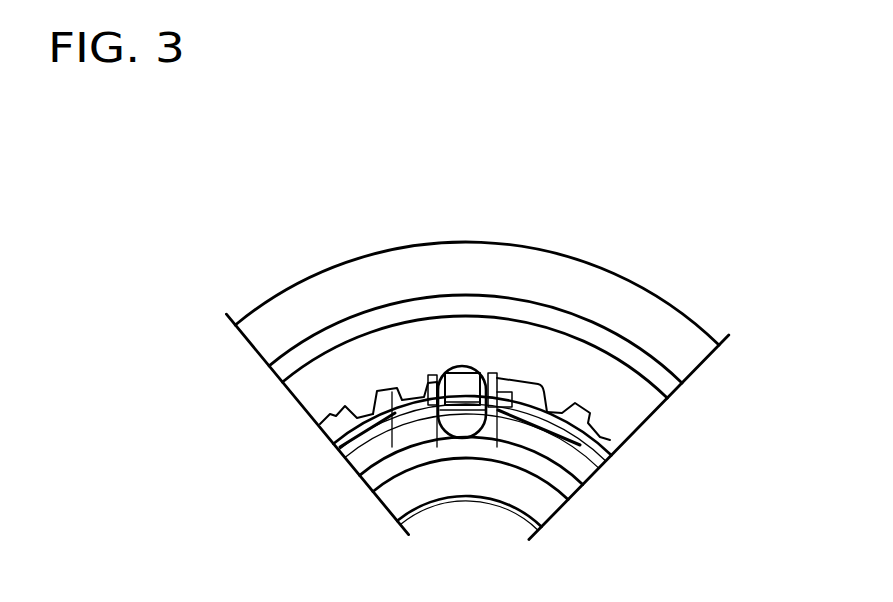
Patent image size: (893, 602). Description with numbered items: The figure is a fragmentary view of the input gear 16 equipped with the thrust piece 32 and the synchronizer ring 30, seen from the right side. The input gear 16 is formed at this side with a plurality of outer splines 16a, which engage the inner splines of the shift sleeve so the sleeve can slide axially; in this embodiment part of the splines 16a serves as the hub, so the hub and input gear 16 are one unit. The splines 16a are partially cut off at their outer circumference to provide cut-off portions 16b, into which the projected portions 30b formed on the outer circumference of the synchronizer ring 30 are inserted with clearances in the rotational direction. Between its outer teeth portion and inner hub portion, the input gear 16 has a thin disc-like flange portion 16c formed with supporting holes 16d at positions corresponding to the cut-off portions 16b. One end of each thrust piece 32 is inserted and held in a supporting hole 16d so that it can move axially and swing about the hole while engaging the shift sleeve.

The input gear 16 is at (358, 285).
The outer splines 16a is at (343, 420).
The cut-off portions 16b is at (360, 455).
The flange portion 16c is at (535, 350).
The supporting holes 16d is at (462, 370).
The synchronizer ring 30 is at (608, 460).
The projected portions 30b is at (560, 420).
The thrust piece 32 is at (465, 387).